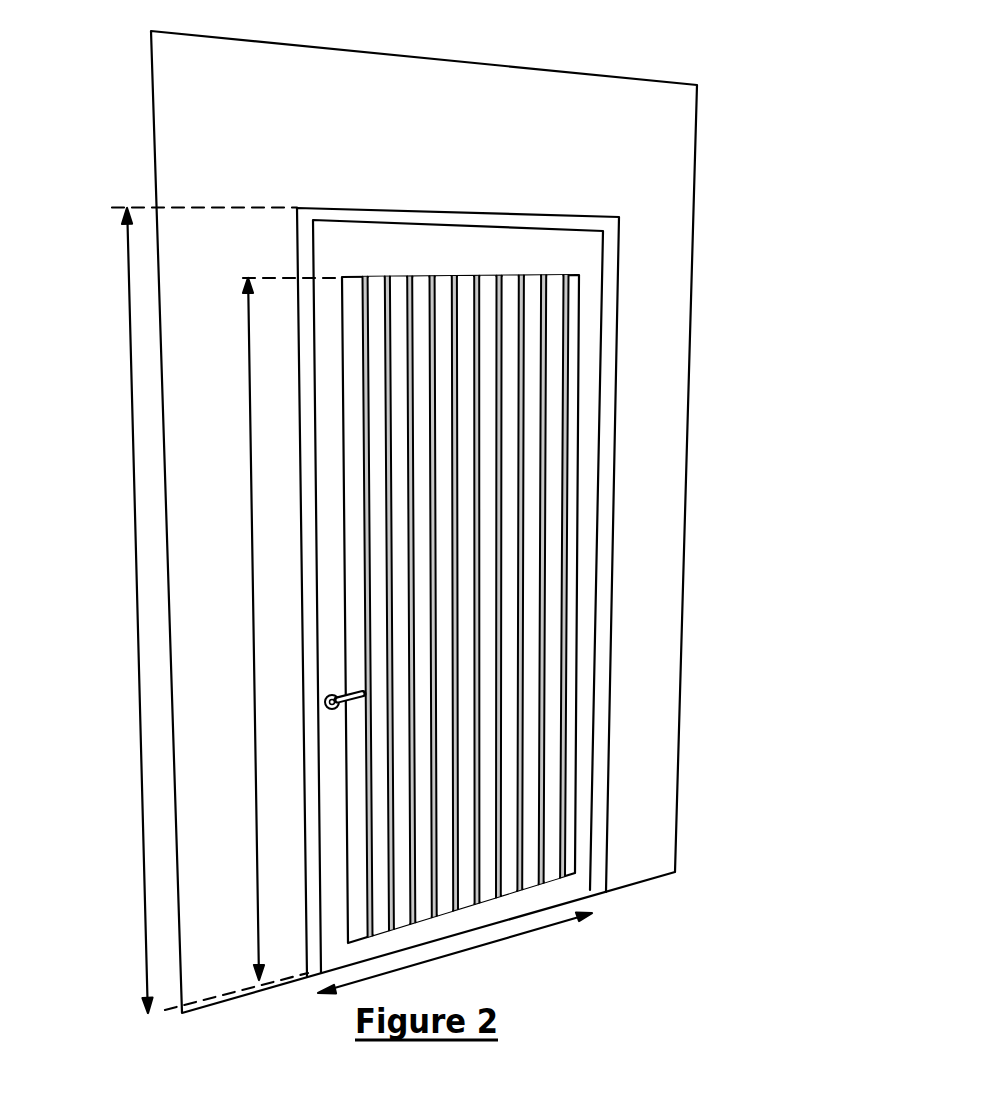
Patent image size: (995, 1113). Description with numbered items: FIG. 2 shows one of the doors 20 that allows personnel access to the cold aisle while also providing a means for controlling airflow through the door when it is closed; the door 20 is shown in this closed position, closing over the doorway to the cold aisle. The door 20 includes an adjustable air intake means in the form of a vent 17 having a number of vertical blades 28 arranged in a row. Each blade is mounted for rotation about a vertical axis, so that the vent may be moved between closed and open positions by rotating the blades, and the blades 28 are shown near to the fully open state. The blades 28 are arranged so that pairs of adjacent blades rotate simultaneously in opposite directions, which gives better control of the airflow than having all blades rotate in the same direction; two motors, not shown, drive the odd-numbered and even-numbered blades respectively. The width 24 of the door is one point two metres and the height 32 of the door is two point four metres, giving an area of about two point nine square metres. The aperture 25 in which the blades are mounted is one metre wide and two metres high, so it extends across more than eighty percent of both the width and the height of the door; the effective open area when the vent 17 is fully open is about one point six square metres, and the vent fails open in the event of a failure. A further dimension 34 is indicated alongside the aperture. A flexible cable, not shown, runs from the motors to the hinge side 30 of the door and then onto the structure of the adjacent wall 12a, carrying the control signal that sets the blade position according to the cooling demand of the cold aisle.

The adjacent wall 12a is at (379, 149).
The door 20 is at (546, 547).
The vertical blades 28 is at (542, 392).
The hinge side 30 is at (612, 553).
The vent 17 is at (538, 677).
The aperture 25 is at (533, 803).
The width of the door 24 is at (533, 937).
The height of the door 32 is at (131, 475).
The door height 34 is at (250, 537).